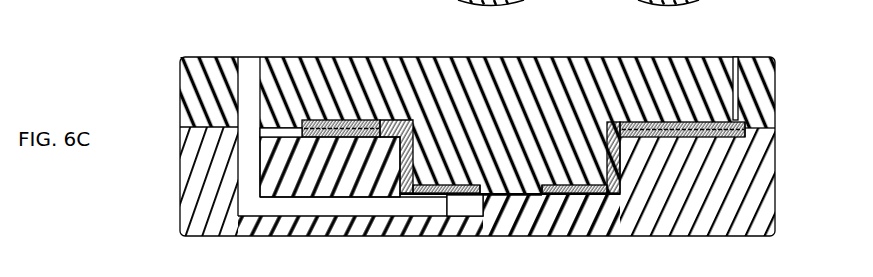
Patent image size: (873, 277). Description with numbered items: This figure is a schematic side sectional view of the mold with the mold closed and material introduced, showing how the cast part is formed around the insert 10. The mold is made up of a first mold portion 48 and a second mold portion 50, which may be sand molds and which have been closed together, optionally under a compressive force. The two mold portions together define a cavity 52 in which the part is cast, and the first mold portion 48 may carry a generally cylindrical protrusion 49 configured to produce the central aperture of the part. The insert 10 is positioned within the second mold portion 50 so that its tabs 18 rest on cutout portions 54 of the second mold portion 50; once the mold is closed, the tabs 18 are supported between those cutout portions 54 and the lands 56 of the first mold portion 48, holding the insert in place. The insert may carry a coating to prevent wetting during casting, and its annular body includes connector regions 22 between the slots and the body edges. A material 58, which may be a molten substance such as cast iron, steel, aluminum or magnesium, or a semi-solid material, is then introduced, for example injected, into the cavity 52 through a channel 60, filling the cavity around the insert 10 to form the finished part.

The insert 10 is at (352, 117).
The tabs 18 is at (290, 126).
The connector regions 22 is at (746, 125).
The first mold portion 48 is at (777, 77).
The generally cylindrical protrusion 49 is at (523, 195).
The second mold portion 50 is at (777, 223).
The cavity 52 is at (443, 190).
The cutout portions 54 is at (290, 133).
The lands 56 is at (275, 126).
The material 58 is at (406, 193).
The channel 60 is at (320, 205).